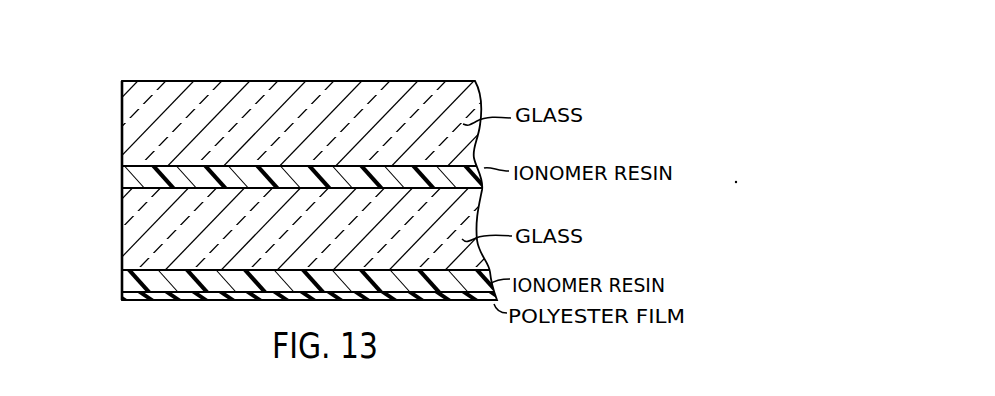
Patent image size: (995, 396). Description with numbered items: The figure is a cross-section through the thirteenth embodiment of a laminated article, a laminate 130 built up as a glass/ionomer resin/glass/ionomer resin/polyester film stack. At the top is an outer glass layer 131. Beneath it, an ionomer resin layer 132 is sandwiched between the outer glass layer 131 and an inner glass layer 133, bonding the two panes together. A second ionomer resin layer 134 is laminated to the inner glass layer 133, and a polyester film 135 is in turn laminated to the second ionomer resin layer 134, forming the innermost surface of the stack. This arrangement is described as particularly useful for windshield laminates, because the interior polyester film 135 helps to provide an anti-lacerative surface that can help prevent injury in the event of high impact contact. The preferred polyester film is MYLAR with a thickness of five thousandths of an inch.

The laminate 130 is at (139, 62).
The outer glass layer 131 is at (125, 127).
The ionomer resin layer 132 is at (125, 171).
The inner glass layer 133 is at (125, 232).
The second ionomer resin layer 134 is at (125, 286).
The polyester film 135 is at (137, 302).